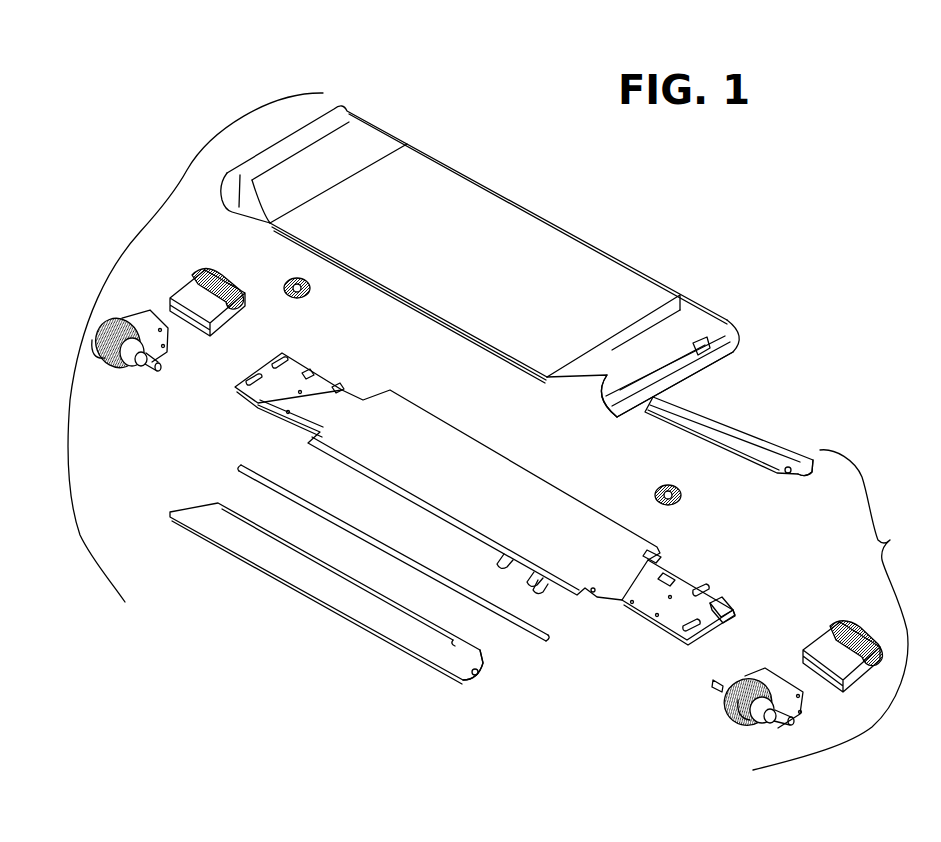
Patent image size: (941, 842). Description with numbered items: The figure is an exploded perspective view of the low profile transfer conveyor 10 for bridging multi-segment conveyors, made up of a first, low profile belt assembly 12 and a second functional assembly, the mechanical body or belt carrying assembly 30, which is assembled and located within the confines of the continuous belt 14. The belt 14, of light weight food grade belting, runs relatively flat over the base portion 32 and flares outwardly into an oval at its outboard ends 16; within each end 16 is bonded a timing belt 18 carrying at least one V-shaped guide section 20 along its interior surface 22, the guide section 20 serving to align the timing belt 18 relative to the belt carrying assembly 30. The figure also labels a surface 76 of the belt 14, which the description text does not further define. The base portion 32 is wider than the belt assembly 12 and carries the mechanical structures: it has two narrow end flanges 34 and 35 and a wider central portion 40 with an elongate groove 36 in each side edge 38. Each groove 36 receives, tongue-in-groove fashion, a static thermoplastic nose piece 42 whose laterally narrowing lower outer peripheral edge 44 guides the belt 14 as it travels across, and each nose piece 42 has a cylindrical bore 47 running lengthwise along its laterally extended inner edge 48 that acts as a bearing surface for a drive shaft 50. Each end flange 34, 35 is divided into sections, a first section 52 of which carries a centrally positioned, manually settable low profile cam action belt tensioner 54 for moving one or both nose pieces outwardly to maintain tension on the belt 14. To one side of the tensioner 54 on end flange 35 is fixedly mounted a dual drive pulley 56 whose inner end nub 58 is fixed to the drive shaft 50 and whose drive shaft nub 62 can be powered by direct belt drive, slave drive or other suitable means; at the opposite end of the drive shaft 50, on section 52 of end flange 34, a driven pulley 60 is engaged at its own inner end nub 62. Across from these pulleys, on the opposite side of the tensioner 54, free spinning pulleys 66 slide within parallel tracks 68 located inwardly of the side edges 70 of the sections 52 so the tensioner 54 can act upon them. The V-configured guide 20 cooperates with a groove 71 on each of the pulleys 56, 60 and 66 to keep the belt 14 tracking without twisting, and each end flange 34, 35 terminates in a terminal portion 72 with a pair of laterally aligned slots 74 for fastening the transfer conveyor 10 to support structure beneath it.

The transfer conveyor 10 is at (137, 232).
The belt assembly 12 is at (588, 236).
The belt 14 is at (617, 283).
The outboard ends 16 is at (365, 120).
The timing belt 18 is at (727, 322).
The guide section 20 is at (745, 360).
The interior surface 22 is at (648, 402).
The belt carrying assembly 30 is at (890, 540).
The base portion 32 is at (459, 495).
The end flange 34 is at (368, 395).
The end flange 35 is at (668, 562).
The elongate grooves 36 is at (507, 553).
The side edge 38 is at (540, 582).
The central portion 40 is at (503, 452).
The nose piece 42 is at (720, 405).
The lower outer peripheral edge 44 is at (811, 458).
The cylindrical bore 47 is at (787, 473).
The inner edge 48 is at (453, 638).
The drive shaft 50 is at (240, 468).
The first section 52 is at (270, 424).
The cam action belt tensioner 54 is at (295, 280).
The dual drive pulley 56 is at (752, 730).
The inner end nub 58 is at (717, 687).
The driven pulley 60 is at (474, 516).
The drive shaft nub 62 is at (162, 372).
The free spinning pulleys 66 is at (215, 280).
The parallel tracks 68 is at (312, 375).
The side edges 70 is at (300, 360).
The groove 71 is at (93, 352).
The terminal portion 72 is at (240, 395).
The slots 74 is at (260, 375).
The top surface 76 is at (478, 222).